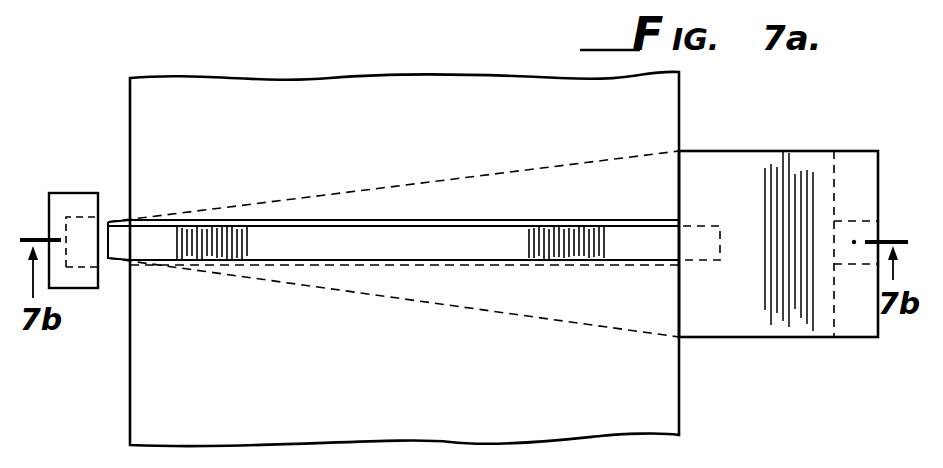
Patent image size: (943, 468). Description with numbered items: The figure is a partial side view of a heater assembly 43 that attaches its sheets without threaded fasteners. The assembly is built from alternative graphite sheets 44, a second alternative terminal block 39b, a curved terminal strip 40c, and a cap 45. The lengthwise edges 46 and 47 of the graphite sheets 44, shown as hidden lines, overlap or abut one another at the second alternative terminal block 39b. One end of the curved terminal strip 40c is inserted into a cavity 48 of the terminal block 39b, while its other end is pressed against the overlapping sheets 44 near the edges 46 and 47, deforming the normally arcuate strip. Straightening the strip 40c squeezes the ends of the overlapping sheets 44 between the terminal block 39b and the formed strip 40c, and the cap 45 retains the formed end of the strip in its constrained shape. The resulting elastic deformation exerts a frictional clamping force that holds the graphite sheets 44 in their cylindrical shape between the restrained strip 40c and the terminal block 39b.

The heater assembly 43 is at (778, 205).
The alternative graphite sheets 44 is at (143, 106).
The cap 45 is at (66, 193).
The lengthwise edge 46 is at (338, 220).
The lengthwise edge 47 is at (268, 268).
The cavity 48 is at (700, 226).
The second alternative terminal block 39b is at (735, 100).
The curved terminal strip 40c is at (505, 198).